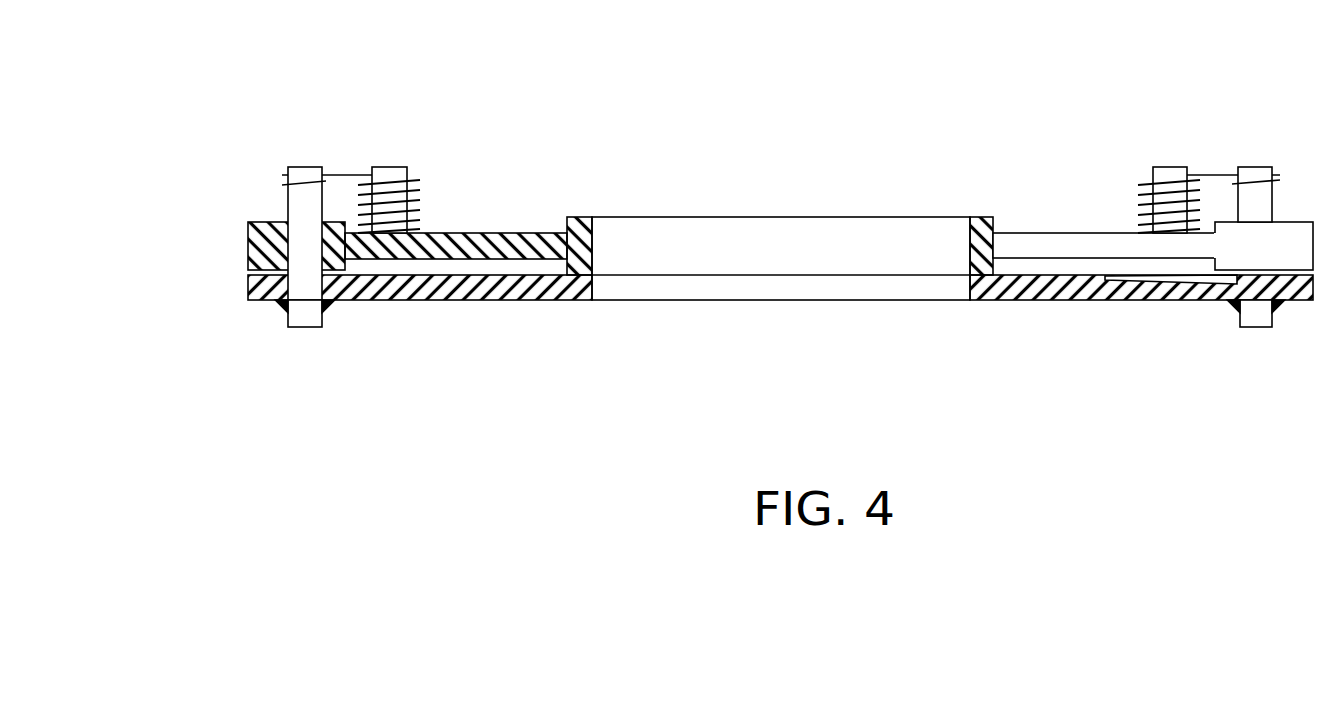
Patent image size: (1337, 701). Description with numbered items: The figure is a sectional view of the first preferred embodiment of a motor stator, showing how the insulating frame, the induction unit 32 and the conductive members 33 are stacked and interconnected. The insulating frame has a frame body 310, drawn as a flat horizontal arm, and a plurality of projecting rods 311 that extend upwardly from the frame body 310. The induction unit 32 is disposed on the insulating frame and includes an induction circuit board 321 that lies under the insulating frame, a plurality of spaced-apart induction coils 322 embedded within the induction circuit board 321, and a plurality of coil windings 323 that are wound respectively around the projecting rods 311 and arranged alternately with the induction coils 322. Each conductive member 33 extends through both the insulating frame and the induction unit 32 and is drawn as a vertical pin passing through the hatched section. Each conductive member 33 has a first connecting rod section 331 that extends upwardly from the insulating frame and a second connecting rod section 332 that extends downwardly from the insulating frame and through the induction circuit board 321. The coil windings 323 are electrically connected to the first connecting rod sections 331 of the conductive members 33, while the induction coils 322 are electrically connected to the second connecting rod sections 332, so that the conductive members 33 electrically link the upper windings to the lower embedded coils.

The induction unit 32 is at (472, 330).
The induction circuit board 321 is at (1033, 303).
The induction coil 322 is at (1172, 290).
The coil winding 323 is at (390, 176).
The frame body 310 is at (1067, 233).
The projecting rod 311 is at (1172, 167).
The conductive member 33 is at (730, 220).
The first connecting rod section 331 is at (286, 200).
The second connecting rod section 332 is at (285, 322).